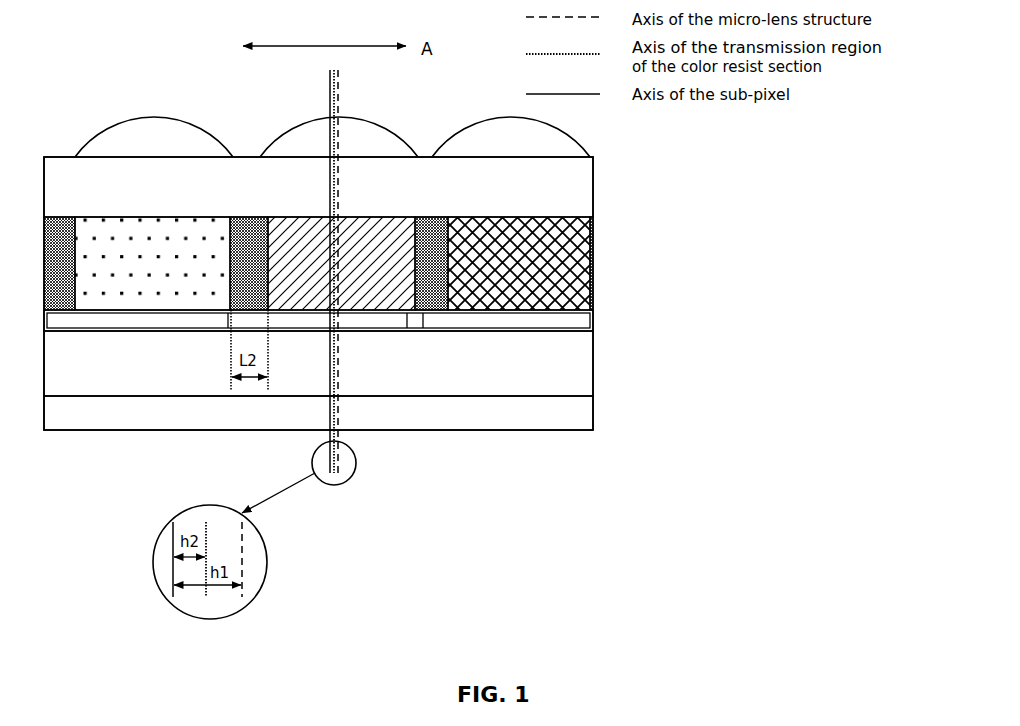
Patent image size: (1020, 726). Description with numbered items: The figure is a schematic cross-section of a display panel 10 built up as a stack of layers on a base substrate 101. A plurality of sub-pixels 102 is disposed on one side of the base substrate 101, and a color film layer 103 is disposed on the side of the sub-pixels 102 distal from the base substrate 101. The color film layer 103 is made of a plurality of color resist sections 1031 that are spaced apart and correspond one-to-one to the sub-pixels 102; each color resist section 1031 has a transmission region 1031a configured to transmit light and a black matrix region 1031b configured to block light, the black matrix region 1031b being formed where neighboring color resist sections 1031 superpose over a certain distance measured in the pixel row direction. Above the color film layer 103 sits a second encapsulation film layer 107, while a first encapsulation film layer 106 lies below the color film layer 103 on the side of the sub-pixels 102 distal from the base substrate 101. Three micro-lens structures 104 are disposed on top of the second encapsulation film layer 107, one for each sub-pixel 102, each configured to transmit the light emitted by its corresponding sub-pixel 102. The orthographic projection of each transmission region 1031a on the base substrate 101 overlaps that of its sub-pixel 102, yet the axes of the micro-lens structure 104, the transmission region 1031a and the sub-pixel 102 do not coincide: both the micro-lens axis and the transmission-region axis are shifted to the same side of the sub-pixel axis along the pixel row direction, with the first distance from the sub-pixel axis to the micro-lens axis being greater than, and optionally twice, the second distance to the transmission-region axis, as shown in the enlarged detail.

The display panel 10 is at (61, 126).
The base substrate 101 is at (563, 416).
The sub-pixel 102 is at (569, 321).
The color film layer 103 is at (498, 368).
The color resist section 1031 is at (498, 368).
The transmission region 1031a is at (508, 293).
The black matrix region 1031b is at (420, 293).
The micro-lens structure 104 is at (539, 144).
The first encapsulation film layer 106 is at (563, 369).
The second encapsulation film layer 107 is at (568, 191).